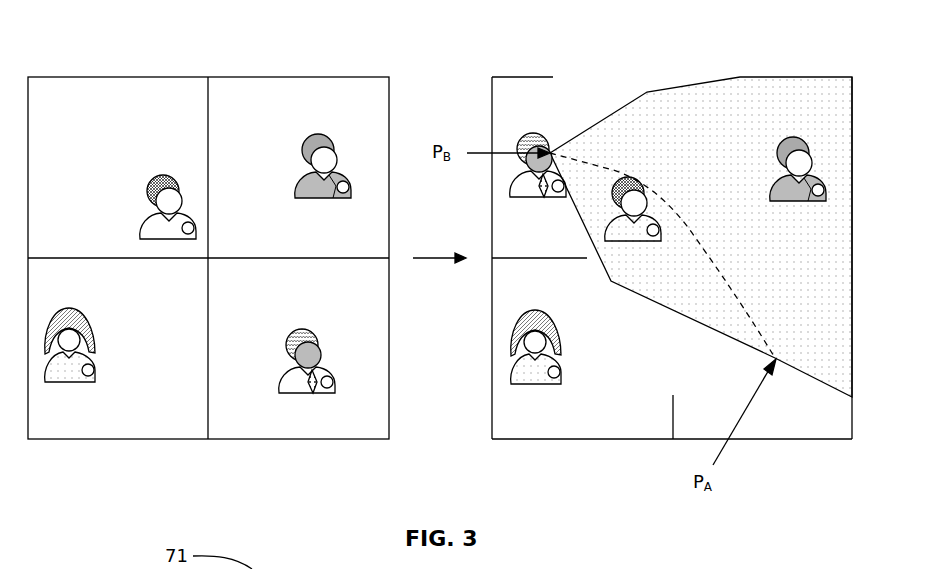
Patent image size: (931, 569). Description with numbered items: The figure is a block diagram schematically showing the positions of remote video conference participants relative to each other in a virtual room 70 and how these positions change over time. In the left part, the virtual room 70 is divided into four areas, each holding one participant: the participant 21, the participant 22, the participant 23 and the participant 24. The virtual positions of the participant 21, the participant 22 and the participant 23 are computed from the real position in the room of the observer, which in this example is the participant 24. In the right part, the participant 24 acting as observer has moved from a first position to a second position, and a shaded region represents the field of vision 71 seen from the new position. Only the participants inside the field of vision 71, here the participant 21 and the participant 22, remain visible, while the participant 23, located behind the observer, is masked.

The virtual room 70 is at (117, 77).
The field of vision 71 is at (719, 104).
The participant 21 is at (163, 176).
The participant 22 is at (318, 135).
The participant 23 is at (64, 310).
The participant 24 is at (302, 329).